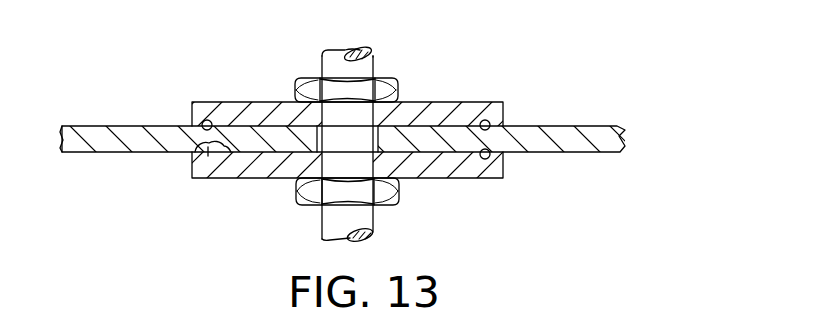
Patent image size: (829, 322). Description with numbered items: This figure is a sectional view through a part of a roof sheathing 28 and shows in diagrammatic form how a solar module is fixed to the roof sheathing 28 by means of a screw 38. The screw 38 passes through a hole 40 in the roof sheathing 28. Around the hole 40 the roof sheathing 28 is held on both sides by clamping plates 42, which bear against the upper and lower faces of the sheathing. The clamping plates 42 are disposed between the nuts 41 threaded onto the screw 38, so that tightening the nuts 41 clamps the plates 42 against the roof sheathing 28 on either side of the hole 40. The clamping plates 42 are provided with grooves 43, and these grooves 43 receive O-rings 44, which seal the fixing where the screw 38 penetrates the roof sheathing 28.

The roof sheathing 28 is at (583, 135).
The screw 38 is at (379, 96).
The hole 40 is at (315, 130).
The nuts 41 is at (310, 193).
The clamping plates 42 is at (498, 113).
The grooves 43 is at (208, 156).
The O-rings 44 is at (203, 121).